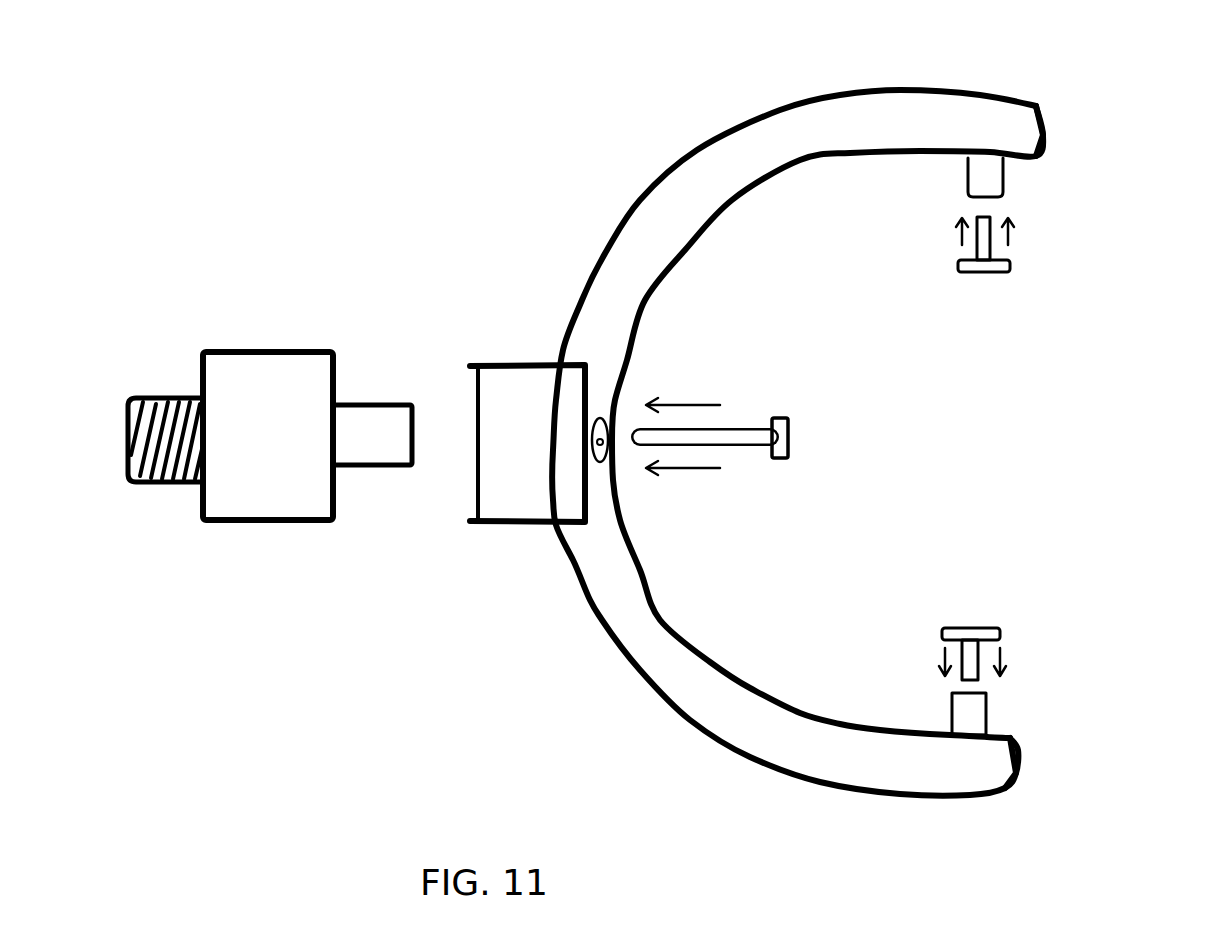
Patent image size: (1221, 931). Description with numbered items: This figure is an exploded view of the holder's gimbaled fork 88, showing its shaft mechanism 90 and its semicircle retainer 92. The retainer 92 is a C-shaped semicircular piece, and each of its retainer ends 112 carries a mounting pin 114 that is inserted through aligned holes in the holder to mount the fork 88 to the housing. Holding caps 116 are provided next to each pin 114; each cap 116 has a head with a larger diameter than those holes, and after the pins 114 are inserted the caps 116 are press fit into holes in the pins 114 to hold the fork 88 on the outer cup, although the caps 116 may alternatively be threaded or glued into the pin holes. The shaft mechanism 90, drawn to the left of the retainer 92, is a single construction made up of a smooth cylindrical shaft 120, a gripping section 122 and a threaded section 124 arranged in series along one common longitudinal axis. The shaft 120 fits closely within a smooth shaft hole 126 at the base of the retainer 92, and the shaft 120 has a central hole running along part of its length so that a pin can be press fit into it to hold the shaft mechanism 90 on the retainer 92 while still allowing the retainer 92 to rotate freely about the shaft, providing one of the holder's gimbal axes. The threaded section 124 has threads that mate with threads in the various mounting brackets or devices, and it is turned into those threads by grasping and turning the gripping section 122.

The gimbaled fork 88 is at (466, 150).
The semicircle retainer 92 is at (812, 98).
The retainer ends 112 is at (1047, 133).
The mounting pin 114 is at (1008, 180).
The holding cap 116 is at (995, 272).
The smooth shaft hole 126 is at (458, 442).
The shaft mechanism 90 is at (292, 333).
The gripping section 122 is at (242, 522).
The smooth cylindrical shaft 120 is at (380, 475).
The threaded section 124 is at (158, 397).